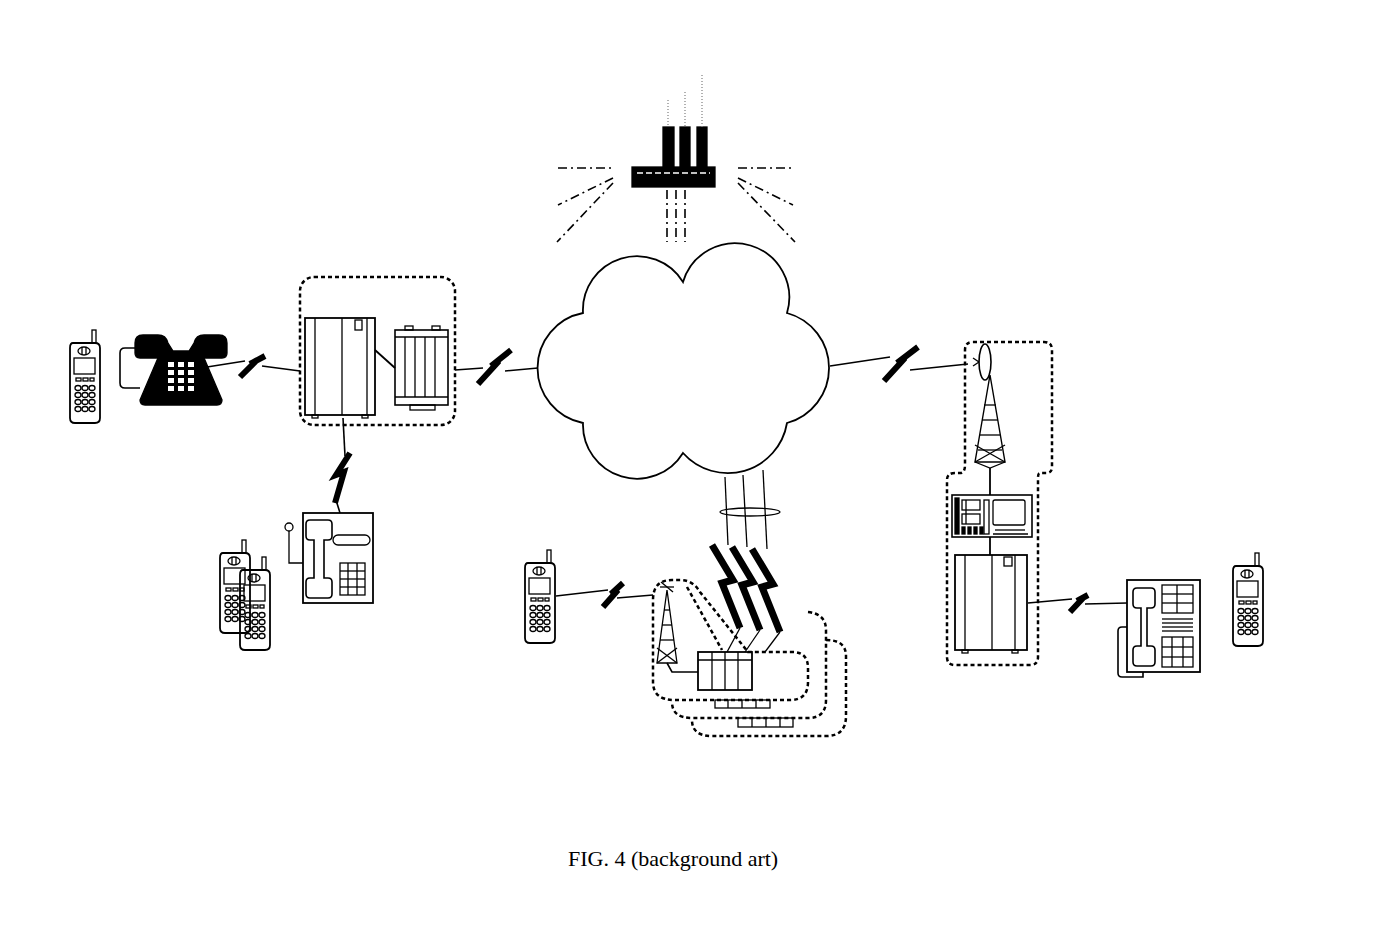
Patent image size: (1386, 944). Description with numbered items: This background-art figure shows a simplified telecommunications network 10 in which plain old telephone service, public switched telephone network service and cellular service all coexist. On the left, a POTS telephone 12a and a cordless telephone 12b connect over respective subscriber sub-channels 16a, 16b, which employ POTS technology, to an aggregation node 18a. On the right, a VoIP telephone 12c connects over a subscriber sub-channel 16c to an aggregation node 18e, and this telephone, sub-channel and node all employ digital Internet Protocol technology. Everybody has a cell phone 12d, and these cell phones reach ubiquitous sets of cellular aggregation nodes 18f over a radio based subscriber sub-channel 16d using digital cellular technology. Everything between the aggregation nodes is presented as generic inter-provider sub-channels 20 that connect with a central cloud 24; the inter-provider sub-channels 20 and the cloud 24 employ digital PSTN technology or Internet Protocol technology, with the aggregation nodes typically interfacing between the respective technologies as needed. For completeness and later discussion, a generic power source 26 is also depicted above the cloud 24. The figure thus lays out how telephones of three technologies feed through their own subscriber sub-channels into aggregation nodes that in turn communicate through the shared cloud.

The telecommunications network 10 is at (1316, 63).
The POTS telephone 12a is at (178, 405).
The cordless telephone 12b is at (340, 603).
The VoIP telephone 12c is at (1163, 672).
The cell phone 12d is at (85, 424).
The subscriber sub-channel 16a is at (250, 380).
The subscriber sub-channel 16b is at (344, 462).
The subscriber sub-channel 16c is at (1076, 614).
The subscriber sub-channel 16d is at (615, 586).
The aggregation node 18a is at (398, 309).
The aggregation node 18e is at (1043, 379).
The cellular aggregation node 18f is at (800, 685).
The inter-provider sub-channel 20 is at (502, 344).
The central cloud 24 is at (697, 380).
The power source 26 is at (647, 167).